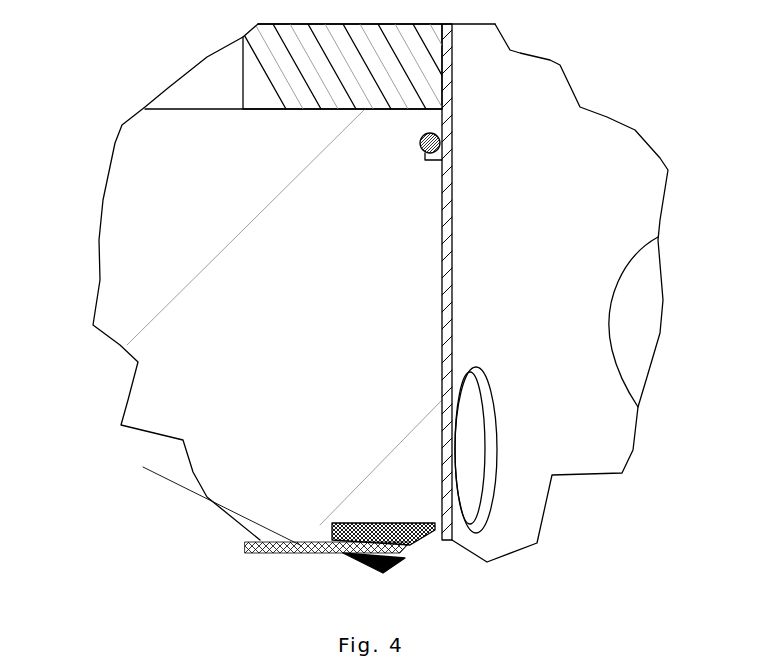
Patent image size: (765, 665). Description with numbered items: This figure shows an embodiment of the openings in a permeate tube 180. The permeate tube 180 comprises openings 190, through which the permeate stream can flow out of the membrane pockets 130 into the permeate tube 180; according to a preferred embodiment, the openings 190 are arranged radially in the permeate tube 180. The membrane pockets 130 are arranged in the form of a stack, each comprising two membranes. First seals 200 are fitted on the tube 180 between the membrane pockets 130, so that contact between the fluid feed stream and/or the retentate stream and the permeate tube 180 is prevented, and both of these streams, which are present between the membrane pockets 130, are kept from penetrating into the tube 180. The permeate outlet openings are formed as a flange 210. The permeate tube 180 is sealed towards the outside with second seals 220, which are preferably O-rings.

The membrane pocket 130 is at (330, 546).
The permeate tube 180 is at (550, 158).
The opening 190 is at (493, 446).
The first seal 200 is at (343, 557).
The flange 210 is at (297, 73).
The second seal 220 is at (420, 143).